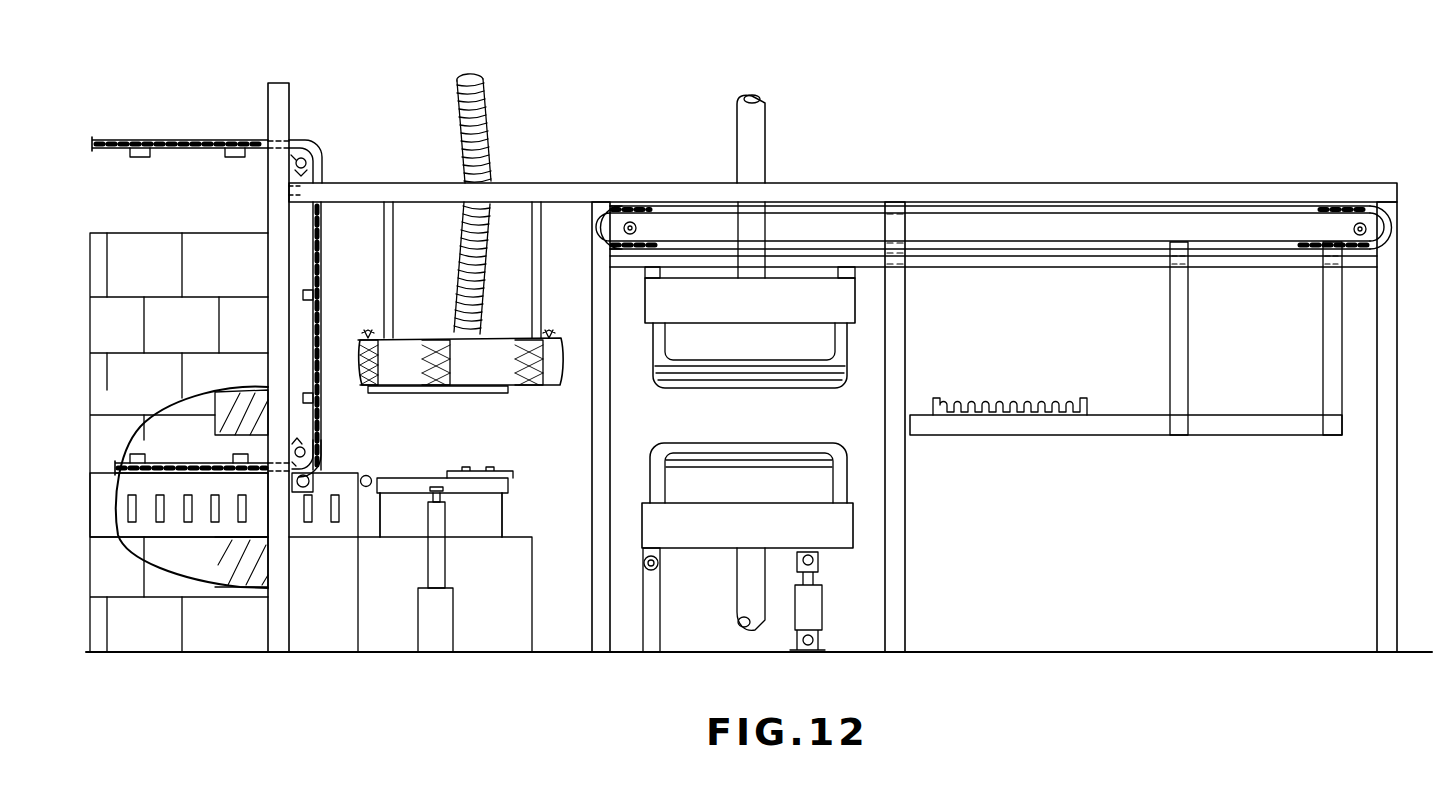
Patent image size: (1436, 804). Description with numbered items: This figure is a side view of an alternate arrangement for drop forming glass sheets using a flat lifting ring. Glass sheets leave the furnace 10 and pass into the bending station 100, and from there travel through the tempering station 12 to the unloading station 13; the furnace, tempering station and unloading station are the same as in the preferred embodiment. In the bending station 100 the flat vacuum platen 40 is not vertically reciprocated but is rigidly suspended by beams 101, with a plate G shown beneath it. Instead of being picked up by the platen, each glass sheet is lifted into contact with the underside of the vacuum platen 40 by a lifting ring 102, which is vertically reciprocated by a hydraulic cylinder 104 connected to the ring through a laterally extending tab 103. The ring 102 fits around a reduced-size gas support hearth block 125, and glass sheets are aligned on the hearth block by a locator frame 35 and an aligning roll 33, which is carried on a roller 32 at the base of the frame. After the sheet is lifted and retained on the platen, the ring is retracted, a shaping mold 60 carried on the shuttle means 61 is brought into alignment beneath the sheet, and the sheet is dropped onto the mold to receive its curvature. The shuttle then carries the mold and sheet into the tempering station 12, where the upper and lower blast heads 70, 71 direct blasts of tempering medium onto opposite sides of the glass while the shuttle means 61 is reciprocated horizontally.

The furnace 10 is at (198, 118).
The bending station 100 is at (408, 96).
The beams 101 is at (405, 272).
The tempering station 12 is at (800, 122).
The unloading station 13 is at (1100, 166).
The vacuum platen 40 is at (530, 395).
The support plate G is at (406, 395).
The aligning roll 33 is at (366, 475).
The roller 32 is at (310, 477).
The laterally extending tab 103 is at (432, 489).
The locator frame 35 is at (497, 476).
The lifting ring 102 is at (466, 494).
The gas support hearth block 125 is at (503, 512).
The hydraulic cylinder 104 is at (446, 565).
The upper blast head 70 is at (690, 394).
The lower blast head 71 is at (780, 438).
The shaping mold 60 is at (1082, 408).
The shuttle means 61 is at (1132, 440).